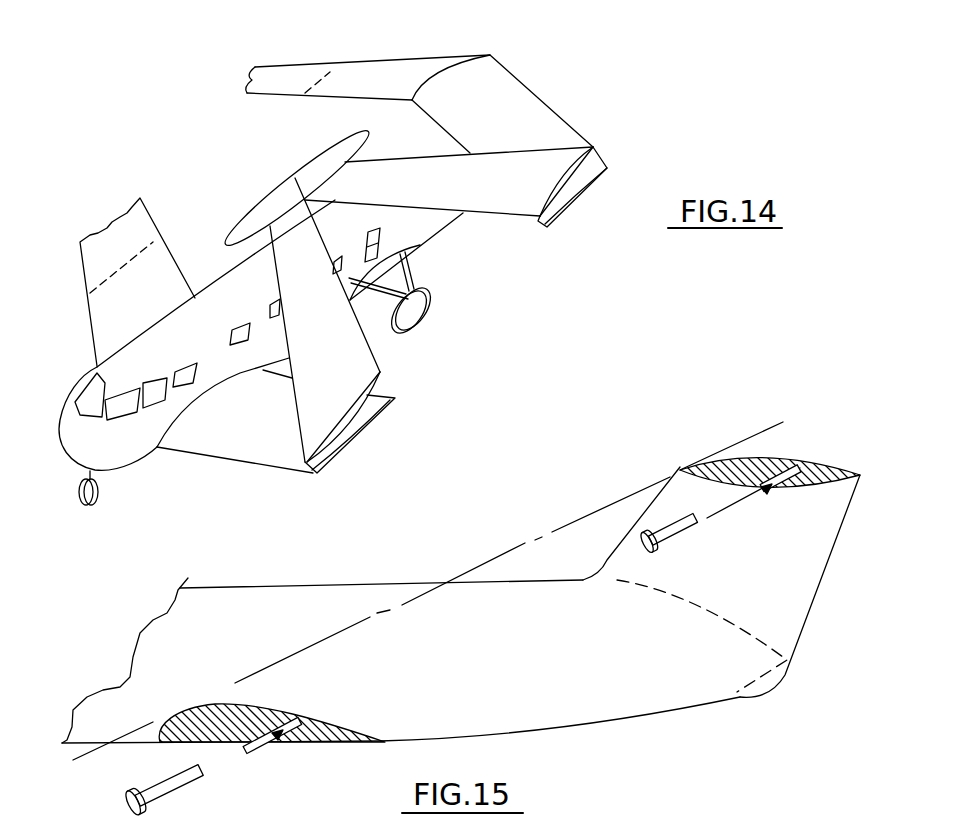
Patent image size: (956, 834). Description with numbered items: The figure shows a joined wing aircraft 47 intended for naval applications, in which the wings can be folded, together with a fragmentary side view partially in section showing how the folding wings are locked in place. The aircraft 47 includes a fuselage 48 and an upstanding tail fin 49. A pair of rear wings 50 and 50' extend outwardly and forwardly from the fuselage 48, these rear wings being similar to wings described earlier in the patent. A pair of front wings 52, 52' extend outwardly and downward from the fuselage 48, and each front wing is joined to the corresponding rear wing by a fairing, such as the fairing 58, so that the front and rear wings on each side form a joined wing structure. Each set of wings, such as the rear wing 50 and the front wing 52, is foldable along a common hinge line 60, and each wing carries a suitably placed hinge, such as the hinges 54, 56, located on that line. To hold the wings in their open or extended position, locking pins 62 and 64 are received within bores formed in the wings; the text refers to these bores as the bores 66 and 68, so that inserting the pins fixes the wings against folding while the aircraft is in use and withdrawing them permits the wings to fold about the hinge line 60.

In FIG. 14, the aircraft 47 is at (450, 287).
In FIG. 14, the fuselage 48 is at (430, 218).
In FIG. 15, the fuselage 48 is at (602, 710).
In FIG. 14, the tail fin 49 is at (410, 133).
In FIG. 15, the tail fin 49 is at (807, 583).
In FIG. 14, the rear wing 50 is at (502, 103).
In FIG. 15, the rear wing 50 is at (765, 446).
In FIG. 14, the rear wing 50' is at (368, 59).
In FIG. 14, the front wing 52 is at (299, 339).
In FIG. 15, the front wing 52 is at (250, 705).
In FIG. 14, the front wing 52' is at (143, 281).
In FIG. 14, the hinge 54 is at (560, 203).
In FIG. 14, the hinge 56 is at (327, 448).
In FIG. 14, the fairing 58 is at (275, 205).
In FIG. 15, the hinge line 60 is at (597, 507).
In FIG. 15, the locking pin 62 is at (168, 788).
In FIG. 15, the locking pin 64 is at (218, 765).
In FIG. 15, the hinge pin 66 is at (673, 533).
In FIG. 15, the bore 68 is at (798, 473).